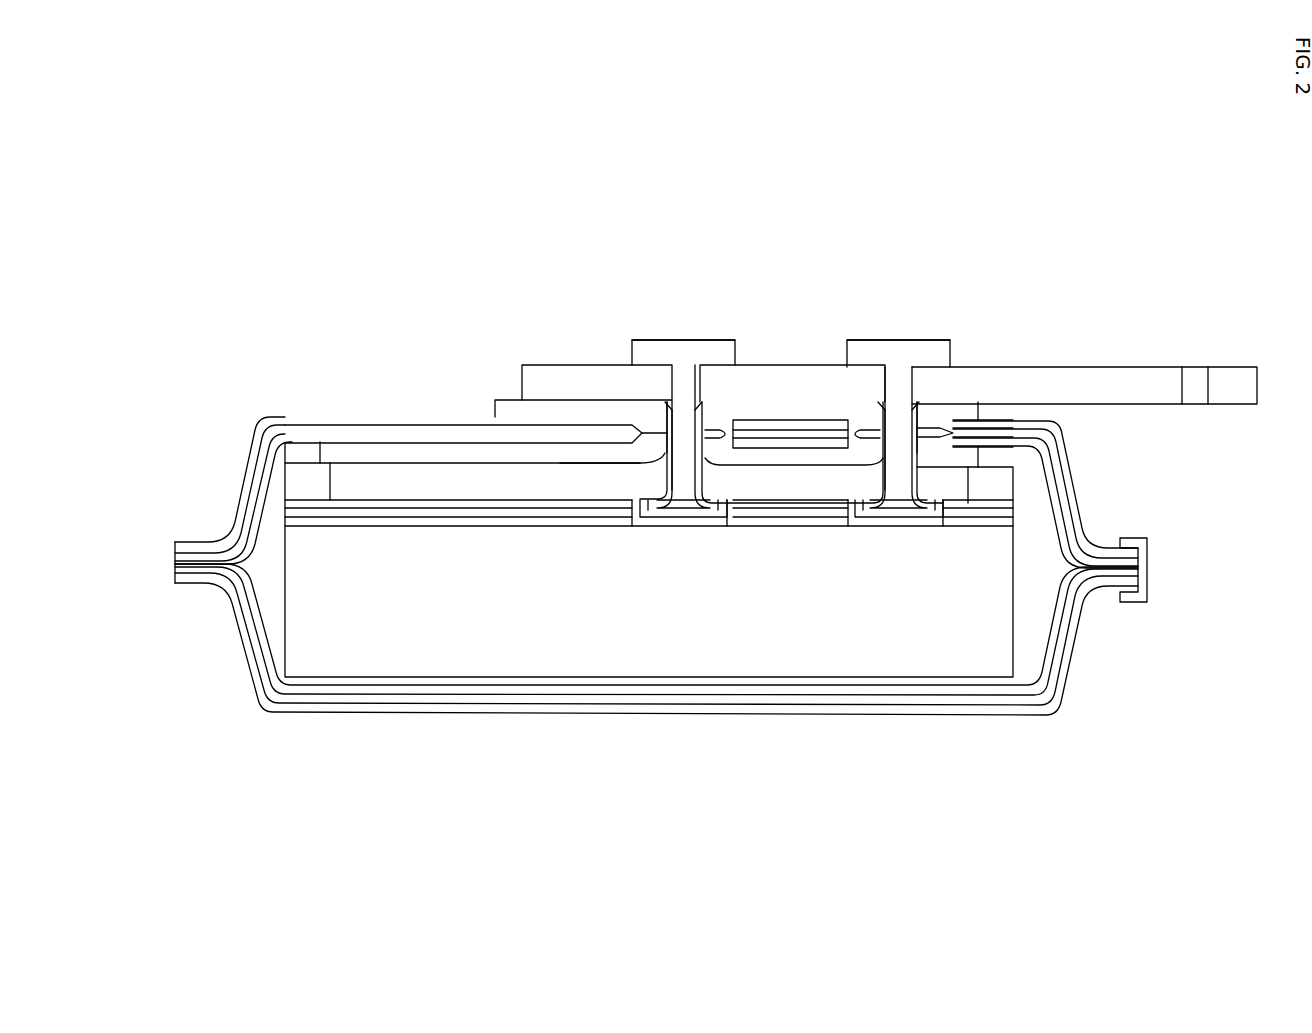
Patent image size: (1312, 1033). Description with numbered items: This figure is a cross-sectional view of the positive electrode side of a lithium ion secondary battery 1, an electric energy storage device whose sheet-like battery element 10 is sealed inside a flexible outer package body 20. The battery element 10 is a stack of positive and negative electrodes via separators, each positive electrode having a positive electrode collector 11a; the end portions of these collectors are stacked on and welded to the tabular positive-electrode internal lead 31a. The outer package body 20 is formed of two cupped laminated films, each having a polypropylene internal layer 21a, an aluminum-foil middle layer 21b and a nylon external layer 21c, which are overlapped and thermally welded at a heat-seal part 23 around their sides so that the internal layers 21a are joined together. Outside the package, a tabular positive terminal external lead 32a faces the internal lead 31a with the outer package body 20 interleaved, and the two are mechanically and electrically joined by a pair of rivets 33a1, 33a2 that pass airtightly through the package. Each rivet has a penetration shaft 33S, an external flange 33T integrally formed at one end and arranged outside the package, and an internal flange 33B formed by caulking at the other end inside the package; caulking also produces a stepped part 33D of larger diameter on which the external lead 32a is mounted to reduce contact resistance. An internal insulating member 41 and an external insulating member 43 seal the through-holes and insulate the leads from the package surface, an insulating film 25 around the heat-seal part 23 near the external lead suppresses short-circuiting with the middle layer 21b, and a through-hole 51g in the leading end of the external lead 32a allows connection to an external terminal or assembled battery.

The lithium ion secondary battery 1 is at (246, 252).
The battery element 10 is at (350, 645).
The positive electrode collector 11a is at (317, 500).
The outer package body 20 is at (735, 236).
The internal layer 21a is at (750, 432).
The middle layer 21b is at (790, 432).
The external layer 21c is at (820, 430).
The heat-seal part 23 is at (187, 539).
The insulating film 25 is at (1133, 545).
The positive-electrode internal lead 31a is at (563, 477).
The positive terminal external lead 32a is at (560, 382).
The rivet 33a1 is at (520, 236).
The rivet 33a2 is at (905, 236).
The internal flange 33B is at (653, 508).
The penetration shaft 33S is at (643, 430).
The external flange 33T is at (683, 357).
The stepped part 33D is at (683, 410).
The internal insulating member 41 is at (417, 453).
The external insulating member 43 is at (497, 413).
The through-hole 51g is at (1193, 385).